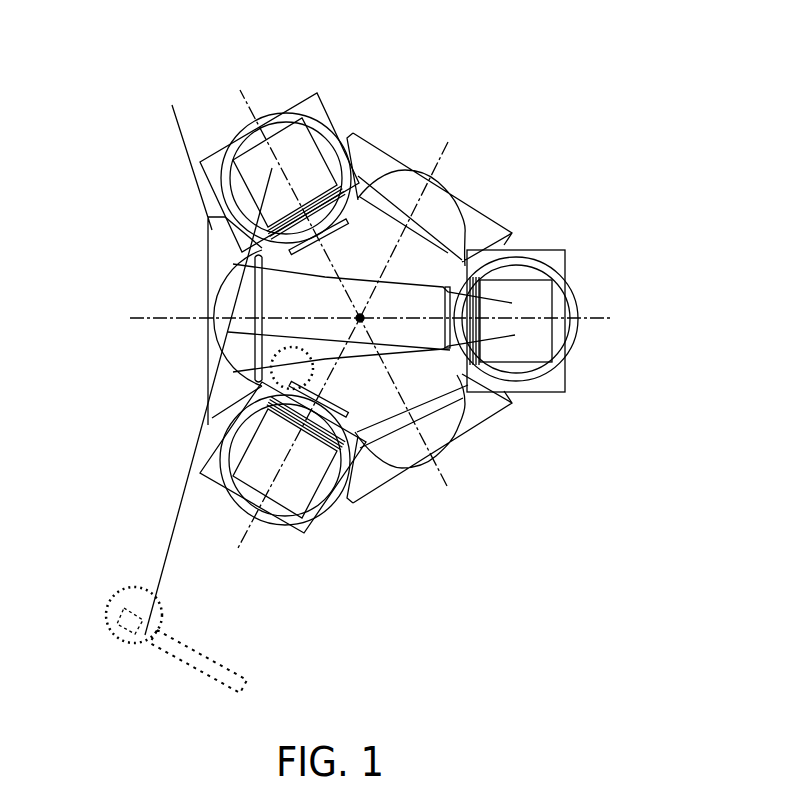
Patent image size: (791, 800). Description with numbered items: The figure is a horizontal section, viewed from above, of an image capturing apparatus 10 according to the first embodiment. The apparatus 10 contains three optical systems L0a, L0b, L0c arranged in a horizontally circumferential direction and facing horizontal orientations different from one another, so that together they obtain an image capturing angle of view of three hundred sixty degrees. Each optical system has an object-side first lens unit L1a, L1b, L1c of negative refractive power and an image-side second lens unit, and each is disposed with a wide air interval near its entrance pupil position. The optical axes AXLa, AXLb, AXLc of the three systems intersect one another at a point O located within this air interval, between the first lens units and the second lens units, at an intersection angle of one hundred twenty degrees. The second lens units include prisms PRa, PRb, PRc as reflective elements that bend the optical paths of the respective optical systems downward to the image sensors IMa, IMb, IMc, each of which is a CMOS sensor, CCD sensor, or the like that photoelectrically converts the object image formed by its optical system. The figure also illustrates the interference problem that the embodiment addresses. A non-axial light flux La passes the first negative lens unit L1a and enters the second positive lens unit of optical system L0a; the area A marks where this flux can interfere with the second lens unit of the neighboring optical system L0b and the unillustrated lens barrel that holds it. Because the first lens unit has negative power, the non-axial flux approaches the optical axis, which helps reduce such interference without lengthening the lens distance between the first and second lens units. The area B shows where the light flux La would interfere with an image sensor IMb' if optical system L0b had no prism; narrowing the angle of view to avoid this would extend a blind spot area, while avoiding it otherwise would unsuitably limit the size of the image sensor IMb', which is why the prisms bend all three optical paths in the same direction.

The image capturing apparatus 10 is at (147, 58).
The optical system L0a is at (203, 308).
The first lens unit L1a is at (212, 357).
The image sensor IMa is at (555, 382).
The prism PRa is at (528, 300).
The optical axis AXLa is at (300, 321).
The optical system L0b is at (430, 160).
The first lens unit L1b is at (473, 190).
The image sensor IMb is at (283, 492).
The prism PRb is at (288, 488).
The optical axis AXLb is at (392, 257).
The optical system L0c is at (455, 470).
The first lens unit L1c is at (425, 483).
The image sensor IMc is at (310, 95).
The prism PRc is at (297, 153).
The optical axis AXLc is at (383, 405).
The intersection point O is at (373, 306).
The interference area A is at (298, 361).
The interference area B is at (125, 615).
The non-axial light flux La is at (186, 494).
The image sensor IMb' is at (198, 679).